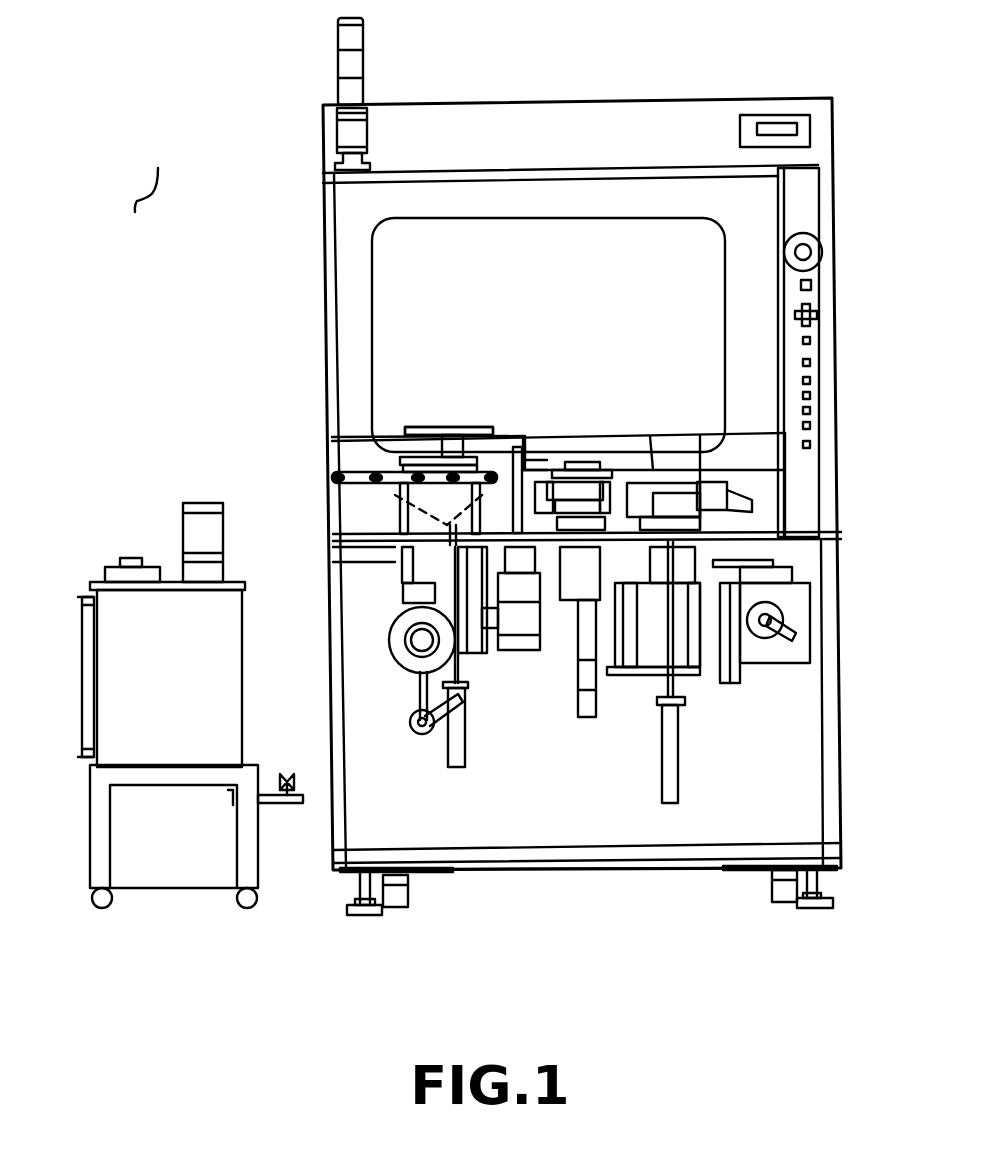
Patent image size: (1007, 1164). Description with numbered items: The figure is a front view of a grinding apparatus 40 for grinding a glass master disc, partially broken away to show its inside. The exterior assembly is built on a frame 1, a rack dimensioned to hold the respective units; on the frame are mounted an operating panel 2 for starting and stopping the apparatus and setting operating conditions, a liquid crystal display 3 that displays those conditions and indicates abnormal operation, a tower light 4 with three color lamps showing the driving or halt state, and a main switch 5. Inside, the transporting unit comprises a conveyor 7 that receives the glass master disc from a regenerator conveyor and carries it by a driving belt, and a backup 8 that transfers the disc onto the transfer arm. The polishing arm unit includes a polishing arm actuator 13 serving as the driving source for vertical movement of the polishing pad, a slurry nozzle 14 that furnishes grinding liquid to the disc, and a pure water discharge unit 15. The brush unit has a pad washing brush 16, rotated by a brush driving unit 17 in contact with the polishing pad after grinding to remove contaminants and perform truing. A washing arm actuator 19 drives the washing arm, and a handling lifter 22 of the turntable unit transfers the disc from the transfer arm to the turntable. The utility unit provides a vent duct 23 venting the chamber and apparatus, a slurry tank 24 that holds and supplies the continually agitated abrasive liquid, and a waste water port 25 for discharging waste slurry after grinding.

The grinding apparatus 40 is at (133, 183).
The frame 1 is at (838, 650).
The operating panel 2 is at (808, 213).
The liquid crystal display 3 is at (780, 127).
The tower light 4 is at (337, 63).
The main switch 5 is at (790, 612).
The conveyor 7 is at (356, 478).
The backup 8 is at (485, 645).
The polishing arm actuator 13 is at (580, 727).
The slurry nozzle 14 is at (577, 447).
The pure water discharge unit 15 is at (470, 395).
The pad washing brush 16 is at (584, 485).
The brush driving unit 17 is at (520, 592).
The washing arm actuator 19 is at (707, 567).
The handling lifter 22 is at (695, 637).
The vent duct 23 is at (400, 663).
The slurry tank 24 is at (172, 603).
The waste water port 25 is at (432, 730).